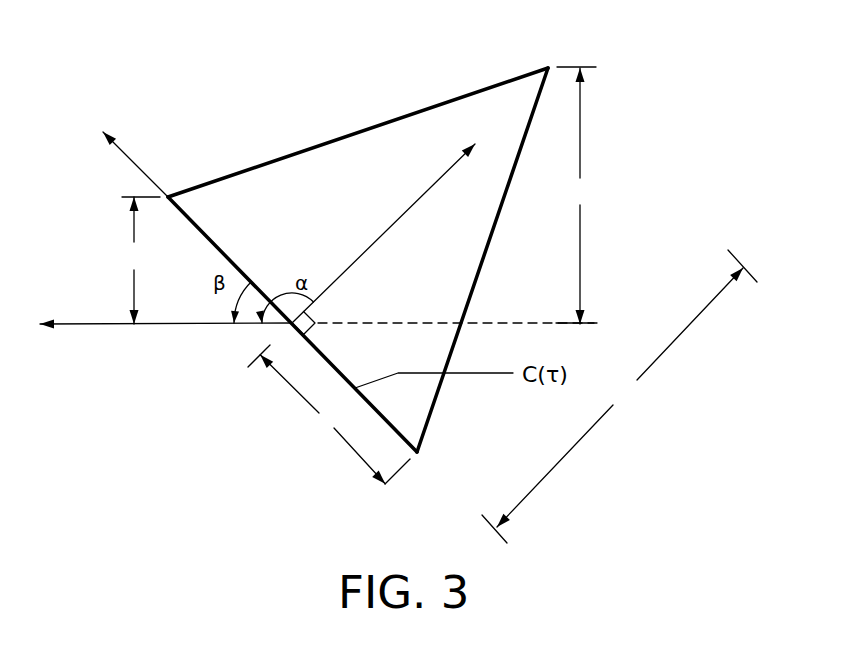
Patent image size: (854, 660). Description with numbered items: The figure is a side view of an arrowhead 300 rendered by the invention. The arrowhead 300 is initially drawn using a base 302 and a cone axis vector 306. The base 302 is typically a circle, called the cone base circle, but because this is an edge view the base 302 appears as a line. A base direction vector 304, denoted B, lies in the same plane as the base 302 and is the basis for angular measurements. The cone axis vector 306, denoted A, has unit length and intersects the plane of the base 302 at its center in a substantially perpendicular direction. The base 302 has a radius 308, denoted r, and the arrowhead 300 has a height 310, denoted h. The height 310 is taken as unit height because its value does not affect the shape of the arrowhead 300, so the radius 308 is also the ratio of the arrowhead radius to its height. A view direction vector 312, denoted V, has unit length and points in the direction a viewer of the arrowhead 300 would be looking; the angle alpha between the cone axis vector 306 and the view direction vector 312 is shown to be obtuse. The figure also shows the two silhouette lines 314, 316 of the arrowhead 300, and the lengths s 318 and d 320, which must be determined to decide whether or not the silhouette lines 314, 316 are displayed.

The arrowhead 300 is at (248, 48).
The base 302 is at (213, 240).
The base direction vector 304 is at (125, 152).
The cone axis vector 306 is at (416, 200).
The radius 308 is at (298, 389).
The height 310 is at (685, 328).
The view direction vector 312 is at (152, 324).
The silhouette line 314 is at (367, 130).
The silhouette line 316 is at (503, 200).
The length s 318 is at (135, 231).
The length d 320 is at (580, 133).